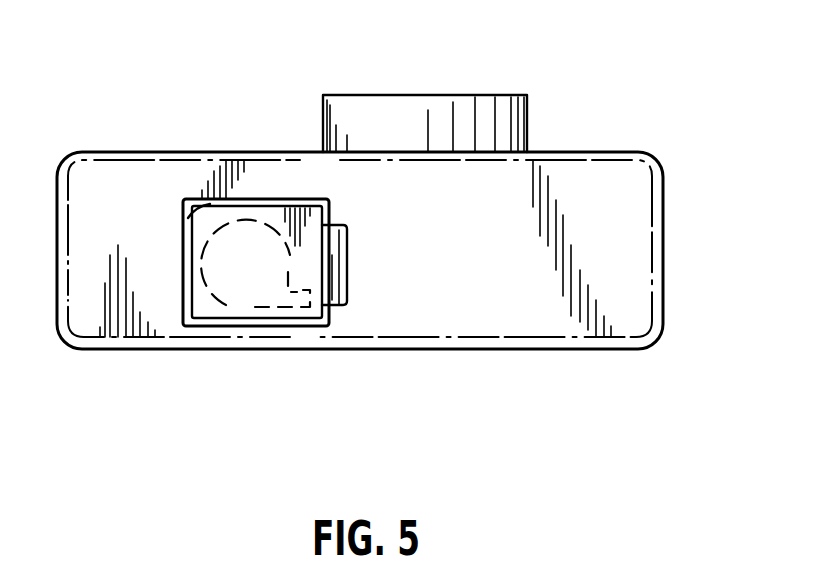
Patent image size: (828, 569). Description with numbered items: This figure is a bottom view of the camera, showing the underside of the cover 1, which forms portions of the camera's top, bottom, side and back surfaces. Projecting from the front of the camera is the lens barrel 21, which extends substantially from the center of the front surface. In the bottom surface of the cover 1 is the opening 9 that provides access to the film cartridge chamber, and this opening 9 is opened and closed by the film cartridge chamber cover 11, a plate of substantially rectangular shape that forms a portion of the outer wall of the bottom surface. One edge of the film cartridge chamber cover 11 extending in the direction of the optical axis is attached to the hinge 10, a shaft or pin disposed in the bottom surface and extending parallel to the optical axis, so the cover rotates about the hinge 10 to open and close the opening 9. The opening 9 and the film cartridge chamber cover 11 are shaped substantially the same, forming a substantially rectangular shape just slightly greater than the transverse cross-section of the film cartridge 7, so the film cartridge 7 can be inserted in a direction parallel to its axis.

The cover 1 is at (635, 217).
The lens barrel 21 is at (427, 95).
The film cartridge 7 is at (258, 318).
The film cartridge chamber cover 11 is at (208, 303).
The hinge 10 is at (347, 263).
The opening 9 is at (188, 218).